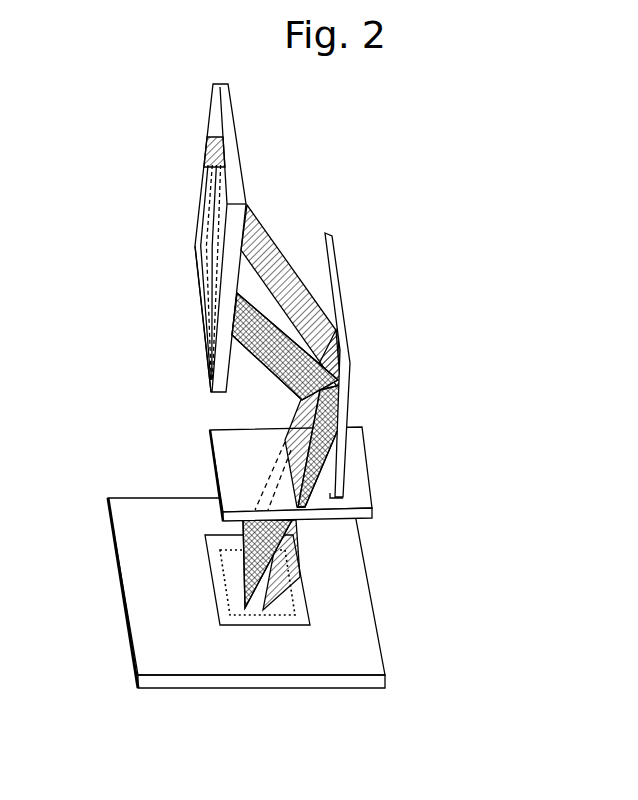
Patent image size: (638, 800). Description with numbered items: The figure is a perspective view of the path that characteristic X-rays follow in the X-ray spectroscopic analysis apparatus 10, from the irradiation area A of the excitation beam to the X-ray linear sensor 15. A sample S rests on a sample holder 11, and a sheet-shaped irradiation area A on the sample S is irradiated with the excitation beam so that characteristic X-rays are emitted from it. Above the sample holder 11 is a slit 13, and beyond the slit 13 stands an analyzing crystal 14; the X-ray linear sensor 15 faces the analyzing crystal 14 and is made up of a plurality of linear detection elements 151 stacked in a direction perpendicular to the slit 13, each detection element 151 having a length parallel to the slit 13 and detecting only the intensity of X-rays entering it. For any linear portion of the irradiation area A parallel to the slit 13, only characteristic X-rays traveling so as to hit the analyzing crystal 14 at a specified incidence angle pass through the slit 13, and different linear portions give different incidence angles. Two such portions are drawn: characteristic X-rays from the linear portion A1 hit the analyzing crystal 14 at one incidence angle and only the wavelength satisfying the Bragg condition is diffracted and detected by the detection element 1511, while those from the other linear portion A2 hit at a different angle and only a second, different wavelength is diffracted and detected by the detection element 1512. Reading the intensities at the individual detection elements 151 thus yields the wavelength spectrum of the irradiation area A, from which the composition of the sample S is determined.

The X-ray spectroscopic analysis apparatus 10 is at (466, 541).
The sample holder 11 is at (360, 625).
The slit 13 is at (287, 438).
The analyzing crystal 14 is at (345, 349).
The X-ray linear sensor 15 is at (215, 238).
The detection elements 151 is at (210, 203).
The detection element 1511 is at (197, 248).
The detection element 1512 is at (207, 153).
The irradiation area A is at (218, 548).
The linear portion A1 is at (240, 580).
The linear portion A2 is at (263, 602).
The sample S is at (310, 583).